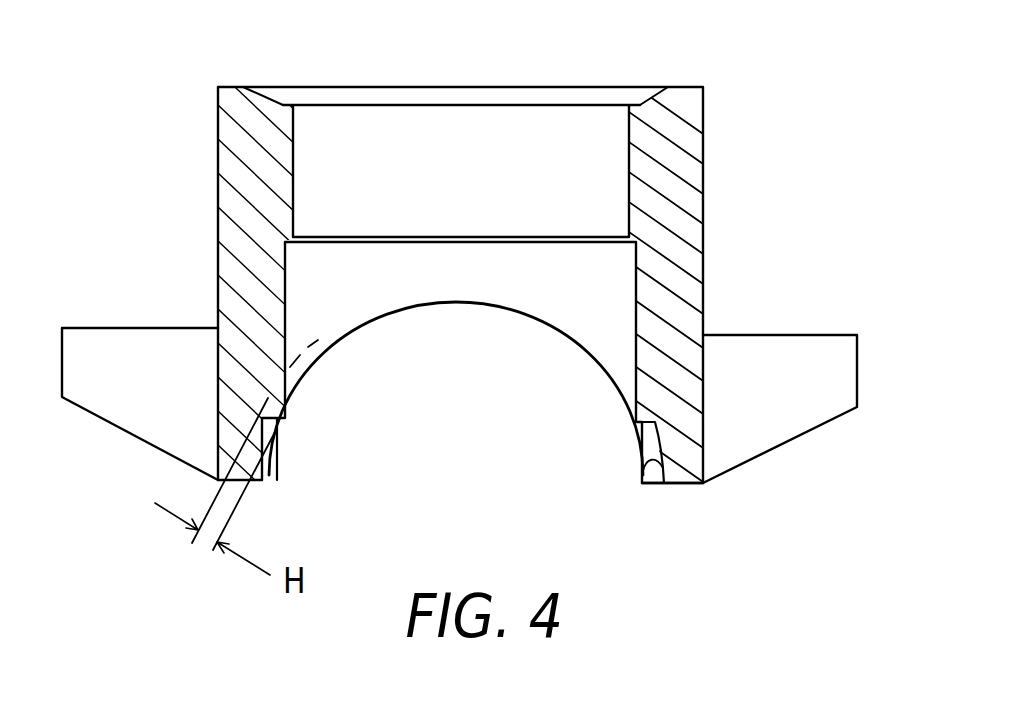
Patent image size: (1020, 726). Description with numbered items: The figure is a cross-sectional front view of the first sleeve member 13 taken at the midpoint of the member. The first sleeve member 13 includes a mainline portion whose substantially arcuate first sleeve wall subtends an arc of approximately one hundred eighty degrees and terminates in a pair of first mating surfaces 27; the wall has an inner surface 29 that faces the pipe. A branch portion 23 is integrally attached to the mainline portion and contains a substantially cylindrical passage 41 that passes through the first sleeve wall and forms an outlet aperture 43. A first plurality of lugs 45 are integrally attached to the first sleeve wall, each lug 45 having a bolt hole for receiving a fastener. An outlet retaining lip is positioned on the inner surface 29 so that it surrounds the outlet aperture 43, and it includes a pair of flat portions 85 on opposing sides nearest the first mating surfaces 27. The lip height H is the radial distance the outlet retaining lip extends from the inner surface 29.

The first sleeve member 13 is at (776, 76).
The branch portion 23 is at (703, 178).
The first mating surfaces 27 is at (730, 518).
The inner surface 29 is at (270, 450).
The cylindrical passage 41 is at (296, 147).
The outlet aperture 43 is at (636, 362).
The lugs 45 is at (787, 352).
The flat portions 85 is at (634, 440).